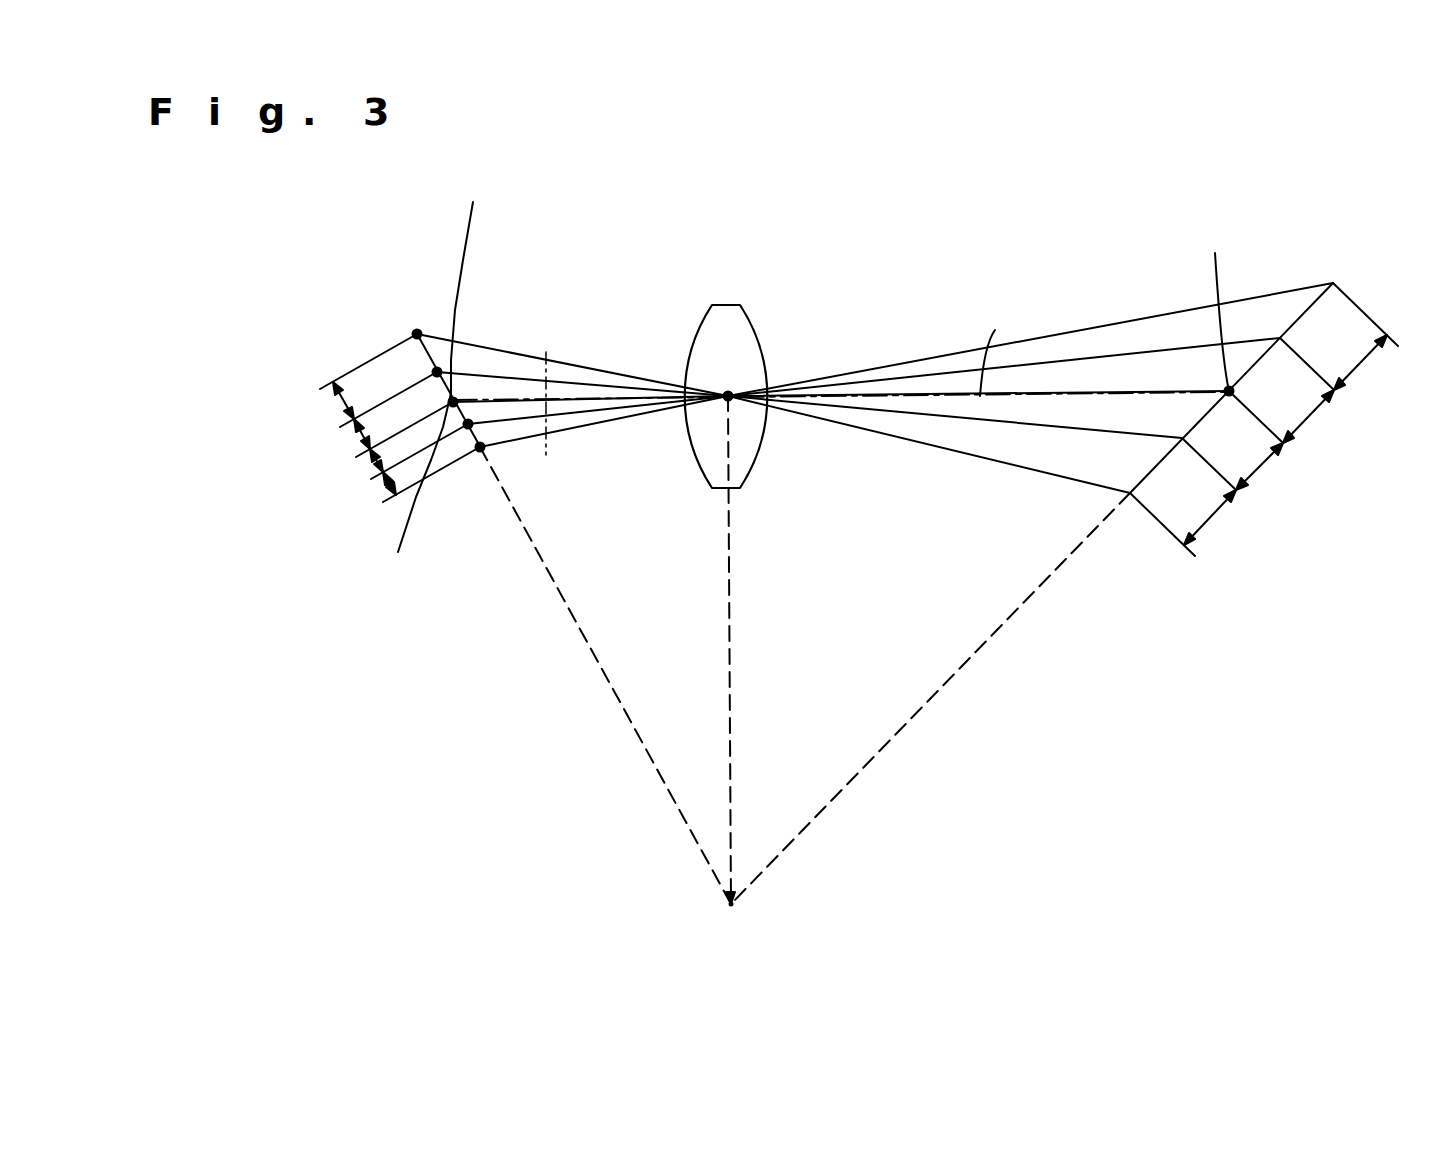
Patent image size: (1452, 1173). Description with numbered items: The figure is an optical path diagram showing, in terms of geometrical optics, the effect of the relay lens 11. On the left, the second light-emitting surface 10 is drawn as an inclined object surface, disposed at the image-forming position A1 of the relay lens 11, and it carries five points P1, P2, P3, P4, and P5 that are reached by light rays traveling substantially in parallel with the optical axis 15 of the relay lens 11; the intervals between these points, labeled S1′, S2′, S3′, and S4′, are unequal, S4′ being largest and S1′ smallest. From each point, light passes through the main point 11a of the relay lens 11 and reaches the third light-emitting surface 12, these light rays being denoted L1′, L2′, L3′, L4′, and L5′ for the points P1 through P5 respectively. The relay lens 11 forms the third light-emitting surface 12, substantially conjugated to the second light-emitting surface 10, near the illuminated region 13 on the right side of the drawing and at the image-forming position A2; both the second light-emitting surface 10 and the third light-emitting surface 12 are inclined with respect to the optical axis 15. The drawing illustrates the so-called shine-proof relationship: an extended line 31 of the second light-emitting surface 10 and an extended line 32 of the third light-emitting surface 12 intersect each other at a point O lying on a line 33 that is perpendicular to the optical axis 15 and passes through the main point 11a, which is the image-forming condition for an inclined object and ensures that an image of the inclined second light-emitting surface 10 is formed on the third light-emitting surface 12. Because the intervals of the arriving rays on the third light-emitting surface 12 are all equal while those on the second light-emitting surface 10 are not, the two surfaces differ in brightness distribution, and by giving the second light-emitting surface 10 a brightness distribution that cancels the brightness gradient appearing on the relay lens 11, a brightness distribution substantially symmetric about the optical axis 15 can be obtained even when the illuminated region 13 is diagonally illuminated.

The second light-emitting surface 10 is at (417, 334).
The relay lens 11 is at (729, 305).
The main point of the relay lens 11a is at (731, 395).
The third light-emitting surface 12 is at (1317, 303).
The illuminated region 13 is at (1134, 490).
The optical axis 15 is at (995, 330).
The extended line of the second light-emitting surface 31 is at (592, 660).
The extended line of the third light-emitting surface 32 is at (912, 705).
The line perpendicular to the optical axis 33 is at (726, 642).
The image-forming position A1 is at (459, 355).
The image-forming position A2 is at (1215, 304).
The point on the second light-emitting surface P1 is at (480, 447).
The point on the second light-emitting surface P2 is at (468, 424).
The point on the second light-emitting surface P3 is at (416, 500).
The point on the second light-emitting surface P4 is at (437, 372).
The point on the second light-emitting surface P5 is at (417, 334).
The light L1′ is at (606, 420).
The light L2′ is at (555, 413).
The light L3′ is at (550, 381).
The light L4′ is at (502, 376).
The light L5′ is at (476, 346).
The interval of the points S1′ is at (392, 496).
The interval of the points S2′ is at (378, 470).
The interval of the points S3′ is at (361, 440).
The interval of the points S4′ is at (341, 406).
The point O is at (732, 929).